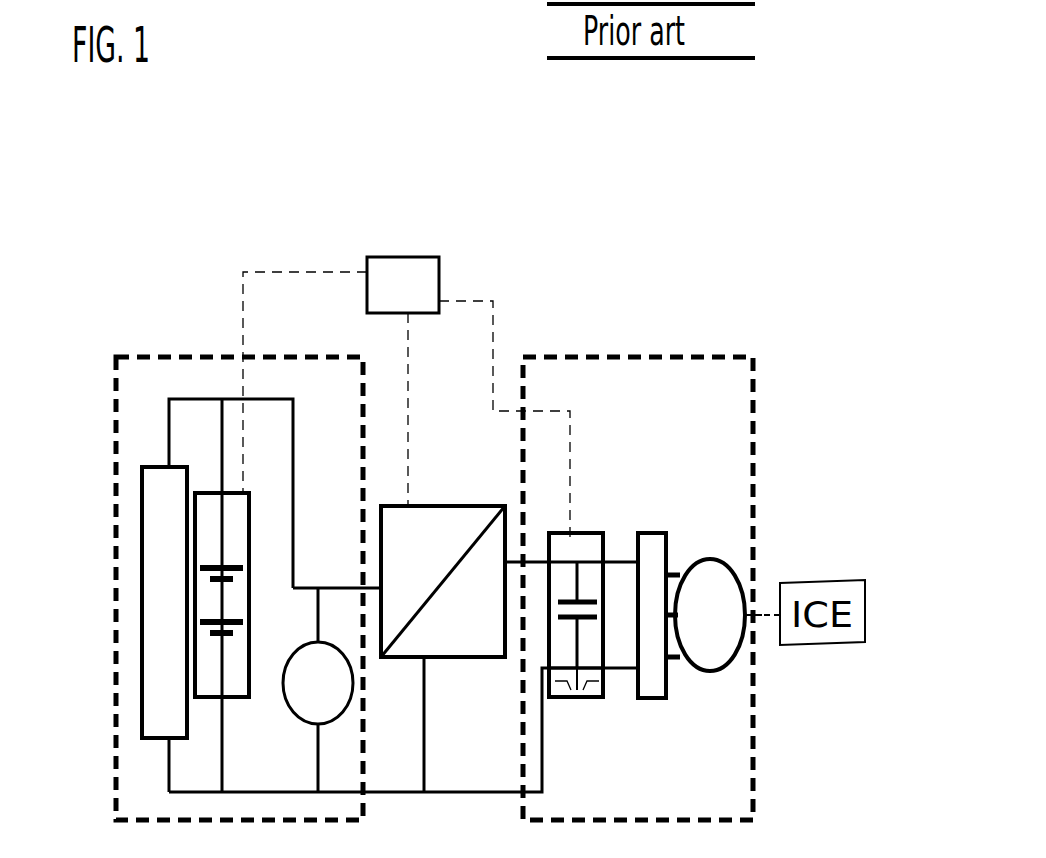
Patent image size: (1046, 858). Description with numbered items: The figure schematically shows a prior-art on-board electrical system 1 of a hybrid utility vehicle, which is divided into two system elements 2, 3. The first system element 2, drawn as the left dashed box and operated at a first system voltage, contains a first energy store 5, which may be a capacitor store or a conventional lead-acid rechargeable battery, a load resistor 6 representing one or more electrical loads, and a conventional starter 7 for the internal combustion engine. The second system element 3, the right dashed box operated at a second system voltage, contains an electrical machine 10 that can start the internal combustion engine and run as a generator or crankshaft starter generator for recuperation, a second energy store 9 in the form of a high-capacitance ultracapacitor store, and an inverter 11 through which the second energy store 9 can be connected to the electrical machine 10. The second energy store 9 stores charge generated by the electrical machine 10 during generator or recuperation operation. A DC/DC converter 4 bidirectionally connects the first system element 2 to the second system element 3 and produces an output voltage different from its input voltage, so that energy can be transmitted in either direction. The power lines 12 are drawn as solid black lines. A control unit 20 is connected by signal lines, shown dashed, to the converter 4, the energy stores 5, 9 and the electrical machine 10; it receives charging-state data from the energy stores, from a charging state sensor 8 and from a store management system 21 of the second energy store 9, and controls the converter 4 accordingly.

The on-board electrical system 1 is at (417, 189).
The first system element 2 is at (143, 357).
The second system element 3 is at (558, 357).
The DC/DC converter 4 is at (440, 505).
The first energy store 5 is at (215, 697).
The load resistor 6 is at (150, 738).
The starter 7 is at (290, 712).
The charging state sensor 8 is at (570, 700).
The second energy store 9 is at (586, 533).
The electrical machine 10 is at (702, 560).
The inverter 11 is at (648, 533).
The power lines 12 is at (169, 422).
The control unit 20 is at (380, 256).
The store management system 21 is at (597, 700).